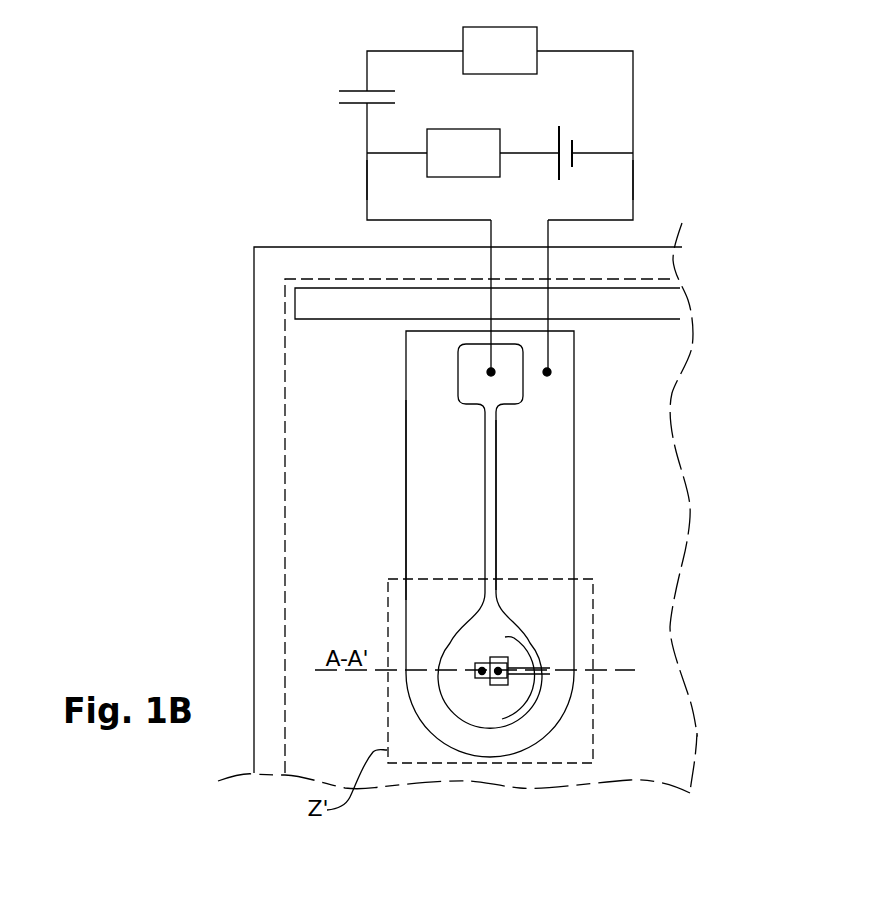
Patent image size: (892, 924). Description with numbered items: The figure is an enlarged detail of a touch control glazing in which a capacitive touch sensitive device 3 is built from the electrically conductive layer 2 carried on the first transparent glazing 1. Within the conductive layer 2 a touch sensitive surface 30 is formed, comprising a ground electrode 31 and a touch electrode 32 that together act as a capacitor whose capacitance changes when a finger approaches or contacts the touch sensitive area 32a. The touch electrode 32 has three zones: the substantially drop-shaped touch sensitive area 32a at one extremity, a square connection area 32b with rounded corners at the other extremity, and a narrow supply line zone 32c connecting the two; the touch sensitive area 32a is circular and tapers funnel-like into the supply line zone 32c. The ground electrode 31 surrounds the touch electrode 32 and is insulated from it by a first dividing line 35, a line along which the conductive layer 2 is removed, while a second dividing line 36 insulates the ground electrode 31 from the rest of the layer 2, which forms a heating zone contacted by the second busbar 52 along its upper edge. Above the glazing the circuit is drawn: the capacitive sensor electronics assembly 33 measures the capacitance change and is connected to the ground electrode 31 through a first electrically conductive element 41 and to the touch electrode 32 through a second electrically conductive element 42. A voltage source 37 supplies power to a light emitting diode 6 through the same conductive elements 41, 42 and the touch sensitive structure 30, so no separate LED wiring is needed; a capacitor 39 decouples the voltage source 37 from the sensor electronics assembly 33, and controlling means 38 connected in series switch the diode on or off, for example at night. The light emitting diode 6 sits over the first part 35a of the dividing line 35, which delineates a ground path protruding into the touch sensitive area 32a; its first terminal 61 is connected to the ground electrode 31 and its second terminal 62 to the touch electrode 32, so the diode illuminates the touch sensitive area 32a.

The first transparent glazing 1 is at (268, 359).
The electrically conductive layer 2 is at (322, 509).
The capacitive touch sensitive device 3 is at (258, 78).
The light emitting diode 6 is at (483, 678).
The touch sensitive surface 30 is at (461, 544).
The ground electrode 31 is at (448, 553).
The touch electrode 32 is at (473, 536).
The touch sensitive area 32a is at (470, 645).
The connection area 32b is at (473, 387).
The supply line zone 32c is at (490, 438).
The capacitive sensor electronics assembly 33 is at (487, 63).
The first dividing line 35 is at (507, 484).
The first part of the dividing line 35a is at (517, 638).
The second dividing line 36 is at (406, 457).
The voltage source 37 is at (567, 133).
The controlling means 38 is at (450, 165).
The capacitor 39 is at (352, 88).
The first electrically conductive element 41 is at (634, 193).
The second electrically conductive element 42 is at (366, 199).
The second busbar 52 is at (313, 302).
The first terminal 61 is at (498, 678).
The second terminal 62 is at (475, 668).